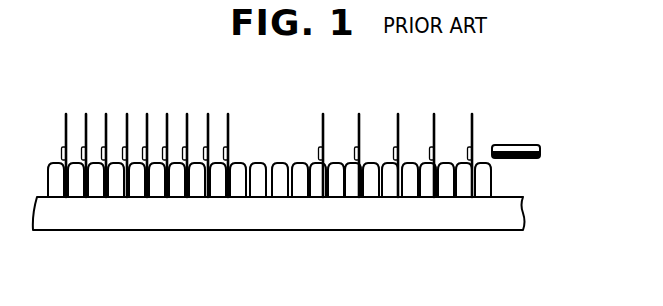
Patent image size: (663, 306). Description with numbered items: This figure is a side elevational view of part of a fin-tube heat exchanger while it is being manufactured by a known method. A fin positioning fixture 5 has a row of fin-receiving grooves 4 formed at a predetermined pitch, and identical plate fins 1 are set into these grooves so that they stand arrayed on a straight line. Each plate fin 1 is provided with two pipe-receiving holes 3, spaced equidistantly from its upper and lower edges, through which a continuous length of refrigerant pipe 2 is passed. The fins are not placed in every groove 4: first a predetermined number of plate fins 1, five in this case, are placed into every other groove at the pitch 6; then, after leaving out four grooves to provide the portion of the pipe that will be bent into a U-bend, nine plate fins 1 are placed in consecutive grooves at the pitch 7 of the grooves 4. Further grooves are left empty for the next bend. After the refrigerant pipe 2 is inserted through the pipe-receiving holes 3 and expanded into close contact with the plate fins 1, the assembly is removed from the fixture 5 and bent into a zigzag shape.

The plate fin 1 is at (473, 128).
The refrigerant pipe 2 is at (518, 145).
The pipe-receiving hole 3 is at (323, 147).
The fin-receiving groove 4 is at (265, 163).
The fin positioning fixture 5 is at (324, 216).
The pitch 6 is at (393, 103).
The pitch 7 is at (200, 103).